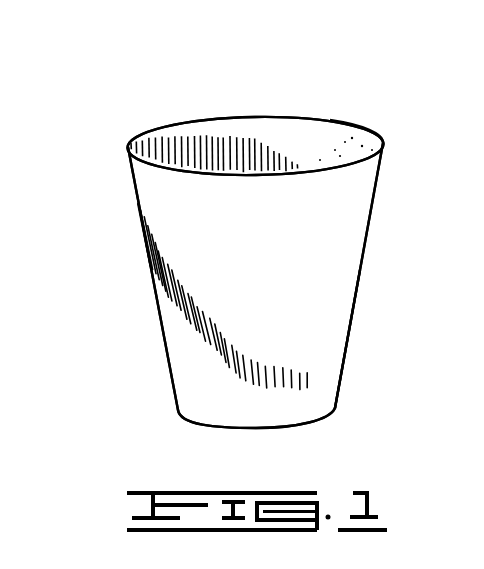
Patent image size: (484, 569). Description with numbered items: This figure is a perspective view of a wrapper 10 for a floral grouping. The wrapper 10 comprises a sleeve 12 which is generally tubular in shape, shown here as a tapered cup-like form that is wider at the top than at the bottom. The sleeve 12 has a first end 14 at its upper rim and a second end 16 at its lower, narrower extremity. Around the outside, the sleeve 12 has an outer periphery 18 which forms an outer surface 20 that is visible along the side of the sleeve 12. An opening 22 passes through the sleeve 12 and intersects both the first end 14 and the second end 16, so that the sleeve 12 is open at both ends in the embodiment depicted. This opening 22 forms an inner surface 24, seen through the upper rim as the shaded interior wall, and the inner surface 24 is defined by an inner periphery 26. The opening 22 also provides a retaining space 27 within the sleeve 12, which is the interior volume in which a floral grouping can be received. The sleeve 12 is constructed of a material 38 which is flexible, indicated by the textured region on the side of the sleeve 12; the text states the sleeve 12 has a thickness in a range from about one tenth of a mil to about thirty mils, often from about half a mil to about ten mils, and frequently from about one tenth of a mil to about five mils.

The wrapper 10 is at (240, 50).
The sleeve 12 is at (352, 111).
The first end 14 is at (128, 147).
The second end 16 is at (215, 427).
The outer periphery 18 is at (325, 275).
The outer surface 20 is at (327, 365).
The opening 22 is at (350, 158).
The inner surface 24 is at (182, 128).
The inner periphery 26 is at (285, 133).
The retaining space 27 is at (237, 125).
The material 38 is at (167, 344).